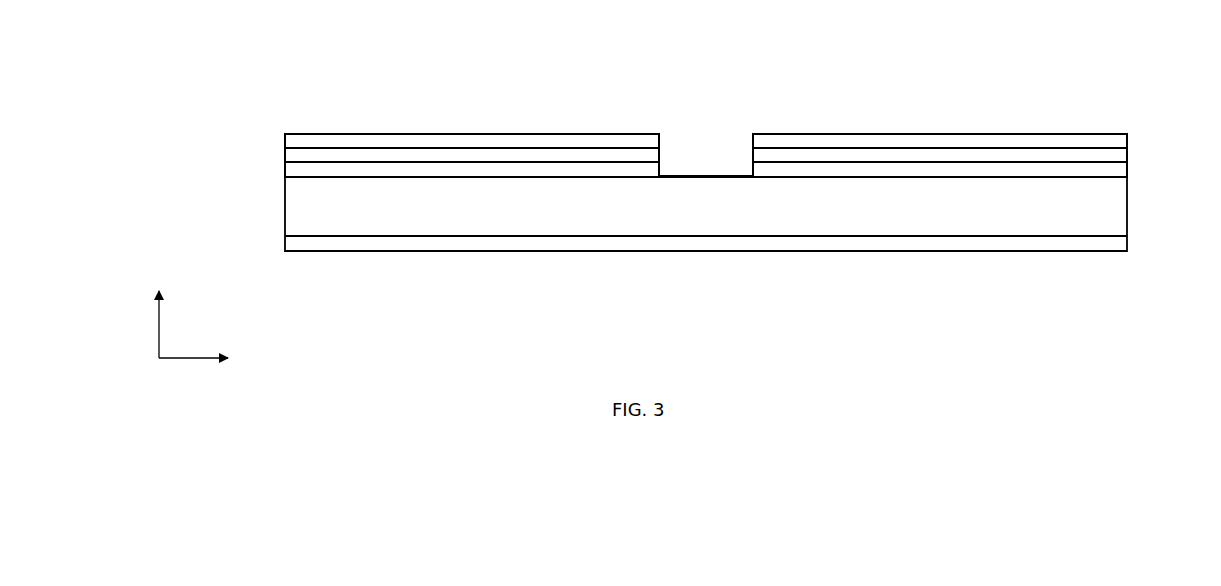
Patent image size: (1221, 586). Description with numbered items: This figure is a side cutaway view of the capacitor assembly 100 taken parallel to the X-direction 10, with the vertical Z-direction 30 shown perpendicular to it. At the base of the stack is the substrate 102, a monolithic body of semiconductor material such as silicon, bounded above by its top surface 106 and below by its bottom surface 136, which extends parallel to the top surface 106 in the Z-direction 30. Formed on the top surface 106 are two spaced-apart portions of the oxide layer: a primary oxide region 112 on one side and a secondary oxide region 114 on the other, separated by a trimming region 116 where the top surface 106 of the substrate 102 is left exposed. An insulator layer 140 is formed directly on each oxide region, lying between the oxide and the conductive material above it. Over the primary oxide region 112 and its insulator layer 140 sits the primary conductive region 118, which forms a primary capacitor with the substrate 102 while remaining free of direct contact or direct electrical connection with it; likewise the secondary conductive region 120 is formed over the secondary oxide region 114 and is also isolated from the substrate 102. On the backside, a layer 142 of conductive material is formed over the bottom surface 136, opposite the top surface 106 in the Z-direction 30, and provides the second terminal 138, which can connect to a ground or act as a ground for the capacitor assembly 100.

The capacitor assembly 100 is at (377, 85).
The substrate 102 is at (295, 208).
The surface 106 is at (706, 175).
The primary oxide region 112 is at (295, 169).
The secondary oxide region 114 is at (1118, 170).
The trimming region 116 is at (682, 138).
The primary conductive region 118 is at (298, 140).
The secondary conductive region 120 is at (1108, 140).
The bottom surface 136 is at (573, 237).
The second terminal 138 is at (390, 262).
The insulator layer 140 is at (287, 155).
The layer of conductive material 142 is at (287, 242).
The Z-direction 30 is at (161, 314).
The X-direction 10 is at (214, 370).